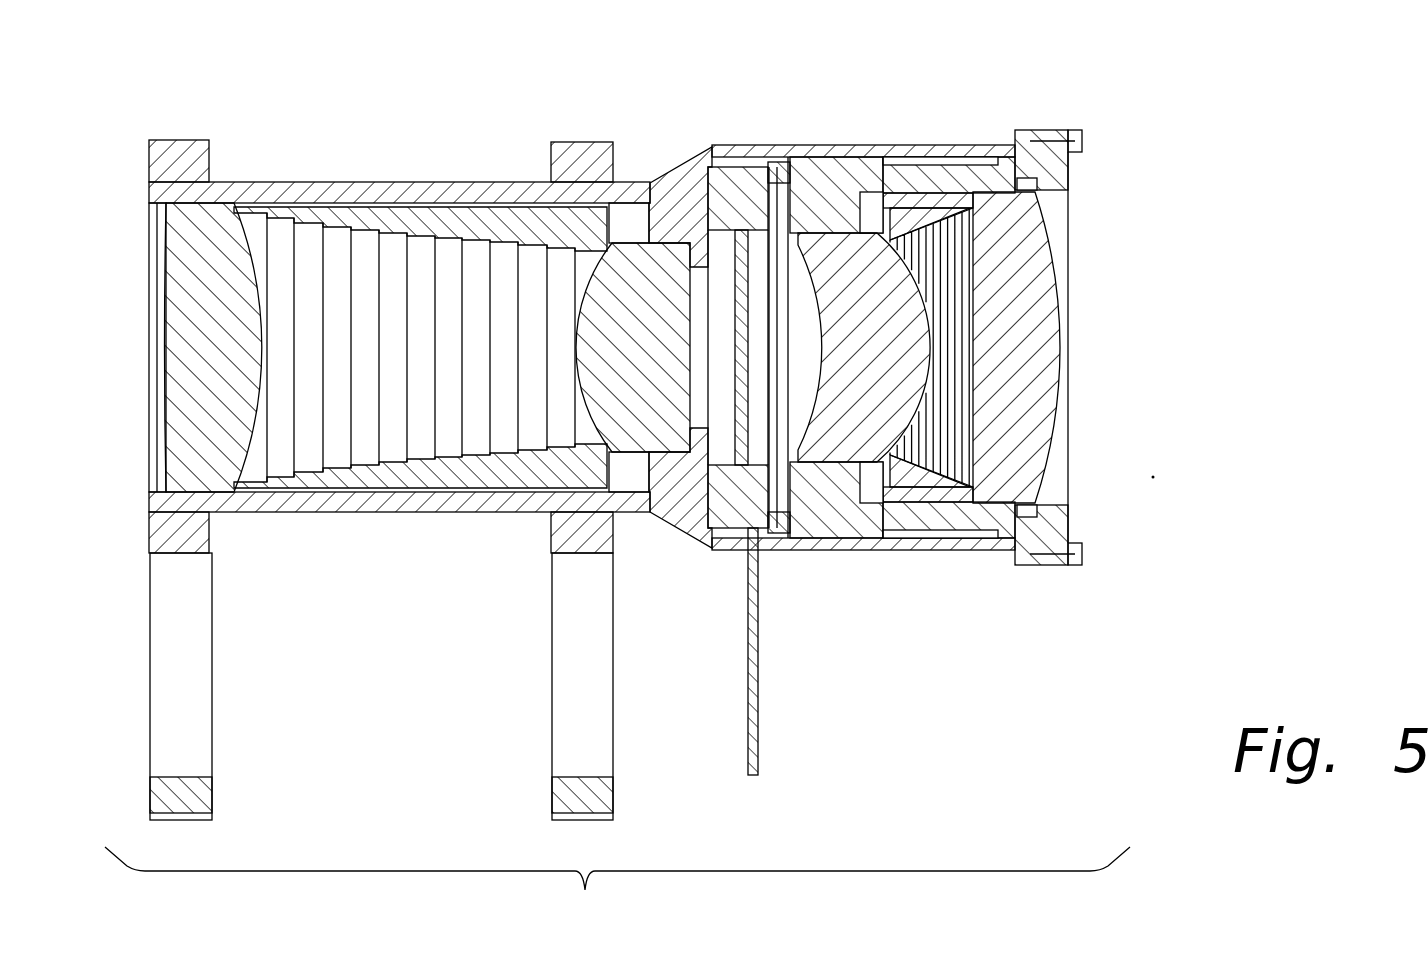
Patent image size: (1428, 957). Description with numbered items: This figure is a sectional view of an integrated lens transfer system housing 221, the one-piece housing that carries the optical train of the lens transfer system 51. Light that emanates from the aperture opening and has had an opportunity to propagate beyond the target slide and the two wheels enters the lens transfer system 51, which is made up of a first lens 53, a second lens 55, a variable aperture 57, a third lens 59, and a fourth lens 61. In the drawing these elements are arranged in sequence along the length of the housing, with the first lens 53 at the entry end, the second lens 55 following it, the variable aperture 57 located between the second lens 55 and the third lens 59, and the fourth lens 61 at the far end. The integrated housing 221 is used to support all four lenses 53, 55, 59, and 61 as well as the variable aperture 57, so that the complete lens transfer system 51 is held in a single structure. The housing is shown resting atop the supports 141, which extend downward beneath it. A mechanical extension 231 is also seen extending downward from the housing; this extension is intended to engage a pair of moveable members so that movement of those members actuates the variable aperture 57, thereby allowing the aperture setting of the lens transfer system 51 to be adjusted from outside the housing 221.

The integrated lens transfer system housing 221 is at (307, 141).
The first lens 53 is at (183, 314).
The second lens 55 is at (587, 305).
The variable aperture 57 is at (738, 176).
The third lens 59 is at (845, 250).
The fourth lens 61 is at (1028, 263).
The supports 141 is at (197, 638).
The mechanical extension 231 is at (760, 641).
The lens transfer system 51 is at (617, 887).